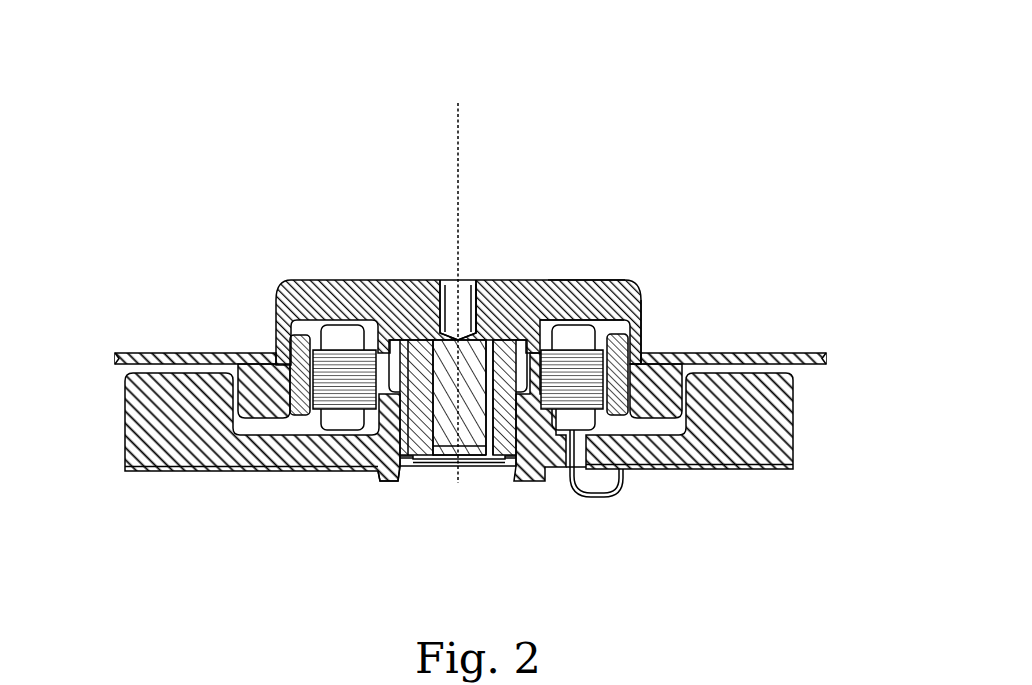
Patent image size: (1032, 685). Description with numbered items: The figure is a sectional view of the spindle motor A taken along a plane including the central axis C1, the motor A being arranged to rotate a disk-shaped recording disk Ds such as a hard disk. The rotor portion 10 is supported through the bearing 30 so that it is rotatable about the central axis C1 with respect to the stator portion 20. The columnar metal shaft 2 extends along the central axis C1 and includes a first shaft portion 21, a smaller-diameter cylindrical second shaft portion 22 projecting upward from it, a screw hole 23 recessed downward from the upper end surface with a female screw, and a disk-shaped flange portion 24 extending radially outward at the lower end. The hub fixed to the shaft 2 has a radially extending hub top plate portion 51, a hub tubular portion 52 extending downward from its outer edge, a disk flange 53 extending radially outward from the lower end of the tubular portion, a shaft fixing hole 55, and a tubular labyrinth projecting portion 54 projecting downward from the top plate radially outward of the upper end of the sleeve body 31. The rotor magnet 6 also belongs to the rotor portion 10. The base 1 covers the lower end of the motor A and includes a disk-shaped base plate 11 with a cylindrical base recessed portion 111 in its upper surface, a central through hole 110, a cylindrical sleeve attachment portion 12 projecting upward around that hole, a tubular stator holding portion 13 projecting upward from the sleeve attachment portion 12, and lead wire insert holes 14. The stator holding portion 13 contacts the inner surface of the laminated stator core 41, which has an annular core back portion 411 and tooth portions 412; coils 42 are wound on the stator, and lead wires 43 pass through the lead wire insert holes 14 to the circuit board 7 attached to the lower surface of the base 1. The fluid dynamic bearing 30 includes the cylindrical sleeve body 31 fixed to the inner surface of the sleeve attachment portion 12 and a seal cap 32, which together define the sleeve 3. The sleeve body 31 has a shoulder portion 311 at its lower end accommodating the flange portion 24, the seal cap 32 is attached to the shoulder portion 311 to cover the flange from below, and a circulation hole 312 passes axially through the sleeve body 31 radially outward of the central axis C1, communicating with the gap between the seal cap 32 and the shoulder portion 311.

The base 1 is at (788, 423).
The shaft 2 is at (450, 470).
The sleeve 3 is at (490, 300).
The rotor magnet 6 is at (270, 330).
The circuit board 7 is at (697, 462).
The rotor portion 10 is at (622, 266).
The base plate 11 is at (132, 440).
The sleeve attachment portion 12 is at (512, 470).
The stator holding portion 13 is at (540, 290).
The lead wire insert hole 14 is at (560, 463).
The stator portion 20 is at (798, 387).
The first shaft portion 21 is at (458, 462).
The second shaft portion 22 is at (431, 276).
The screw hole 23 is at (438, 277).
The flange portion 24 is at (482, 460).
The bearing 30 is at (428, 462).
The sleeve body 31 is at (437, 460).
The seal cap 32 is at (484, 460).
The stator core 41 is at (250, 508).
The coil 42 is at (273, 280).
The lead wire 43 is at (604, 491).
The hub top plate portion 51 is at (567, 277).
The hub tubular portion 52 is at (637, 333).
The disk flange 53 is at (658, 348).
The labyrinth projecting portion 54 is at (326, 331).
The shaft fixing hole 55 is at (480, 272).
The through hole 110 is at (368, 466).
The base recessed portion 111 is at (197, 349).
The shoulder portion 311 is at (420, 462).
The circulation hole 312 is at (503, 461).
The core back portion 411 is at (366, 390).
The tooth portion 412 is at (332, 383).
The motor A is at (678, 116).
The recording disk Ds is at (763, 349).
The central axis C1 is at (456, 103).